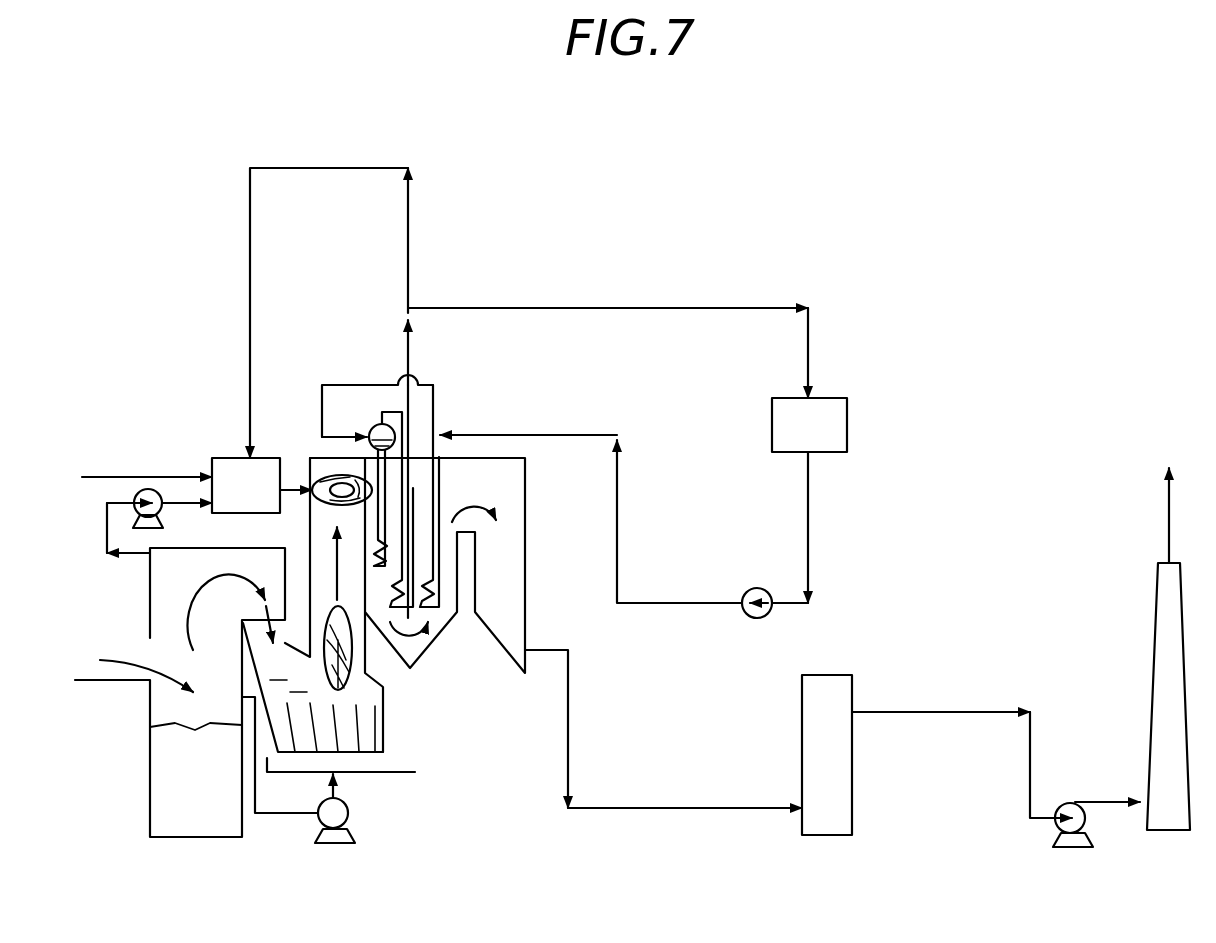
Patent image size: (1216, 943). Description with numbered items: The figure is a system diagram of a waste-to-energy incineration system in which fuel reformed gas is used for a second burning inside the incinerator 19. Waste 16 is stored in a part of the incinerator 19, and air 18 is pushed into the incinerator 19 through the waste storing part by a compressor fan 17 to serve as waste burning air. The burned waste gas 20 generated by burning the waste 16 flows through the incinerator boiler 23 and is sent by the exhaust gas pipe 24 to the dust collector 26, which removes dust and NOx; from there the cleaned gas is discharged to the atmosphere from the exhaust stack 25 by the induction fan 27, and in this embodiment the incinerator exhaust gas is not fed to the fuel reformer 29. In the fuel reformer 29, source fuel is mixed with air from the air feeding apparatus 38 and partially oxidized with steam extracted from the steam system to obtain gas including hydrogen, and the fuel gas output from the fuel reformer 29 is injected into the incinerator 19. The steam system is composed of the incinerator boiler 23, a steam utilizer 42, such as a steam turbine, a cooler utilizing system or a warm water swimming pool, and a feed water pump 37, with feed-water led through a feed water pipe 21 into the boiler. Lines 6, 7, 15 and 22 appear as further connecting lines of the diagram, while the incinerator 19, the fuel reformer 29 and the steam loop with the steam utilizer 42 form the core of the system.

The raw material supply line 6 is at (118, 477).
The return line 7 is at (107, 523).
The recirculation line 15 is at (250, 268).
The waste 16 is at (120, 660).
The compressor fan 17 is at (350, 815).
The air 18 is at (338, 780).
The incinerator 19 is at (377, 715).
The burned waste gas 20 is at (332, 570).
The feed water pipe 21 is at (617, 515).
The exhaust gas line 22 is at (740, 308).
The incinerator boiler 23 is at (373, 478).
The exhaust gas pipe 24 is at (668, 808).
The exhaust stack 25 is at (1160, 677).
The dust collector 26 is at (852, 818).
The induction fan 27 is at (1085, 818).
The fuel reformer 29 is at (225, 468).
The feed water pump 37 is at (757, 619).
The air feeding apparatus 38 is at (148, 489).
The steam utilizer 42 is at (823, 412).